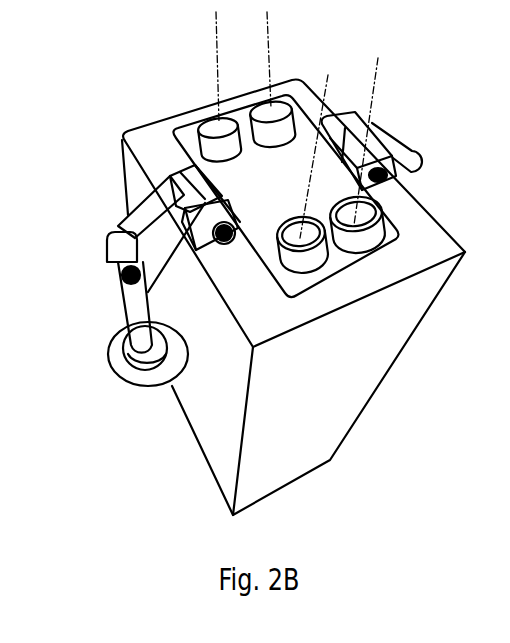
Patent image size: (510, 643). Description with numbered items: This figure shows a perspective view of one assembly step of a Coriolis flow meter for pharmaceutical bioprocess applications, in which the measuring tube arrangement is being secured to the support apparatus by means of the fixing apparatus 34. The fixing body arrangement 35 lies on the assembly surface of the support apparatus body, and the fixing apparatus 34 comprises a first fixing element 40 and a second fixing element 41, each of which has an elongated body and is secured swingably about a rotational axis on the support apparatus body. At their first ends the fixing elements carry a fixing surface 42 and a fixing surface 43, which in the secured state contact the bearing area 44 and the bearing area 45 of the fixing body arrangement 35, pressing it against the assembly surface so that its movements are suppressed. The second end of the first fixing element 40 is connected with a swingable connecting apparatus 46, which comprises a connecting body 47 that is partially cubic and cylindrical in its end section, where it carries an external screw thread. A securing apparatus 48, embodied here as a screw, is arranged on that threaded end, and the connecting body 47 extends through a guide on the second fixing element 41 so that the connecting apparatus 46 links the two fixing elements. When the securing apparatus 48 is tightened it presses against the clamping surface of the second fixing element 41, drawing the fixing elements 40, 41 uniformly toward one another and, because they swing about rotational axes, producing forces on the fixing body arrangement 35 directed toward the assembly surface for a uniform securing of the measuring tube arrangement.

The fixing apparatus 34 is at (121, 194).
The fixing body arrangement 35 is at (256, 155).
The first fixing element 40 is at (163, 232).
The second fixing element 41 is at (413, 138).
The fixing surface 42 is at (194, 170).
The fixing surface 43 is at (358, 113).
The bearing area 44 is at (248, 220).
The bearing area 45 is at (338, 175).
The swingable connecting apparatus 46 is at (120, 295).
The connecting body 47 is at (140, 303).
The securing apparatus 48 is at (121, 379).